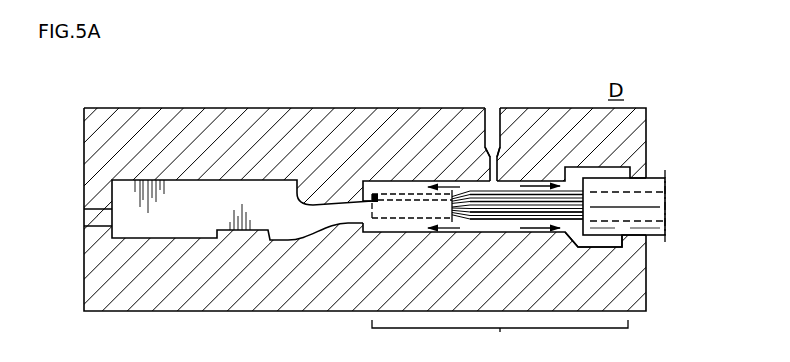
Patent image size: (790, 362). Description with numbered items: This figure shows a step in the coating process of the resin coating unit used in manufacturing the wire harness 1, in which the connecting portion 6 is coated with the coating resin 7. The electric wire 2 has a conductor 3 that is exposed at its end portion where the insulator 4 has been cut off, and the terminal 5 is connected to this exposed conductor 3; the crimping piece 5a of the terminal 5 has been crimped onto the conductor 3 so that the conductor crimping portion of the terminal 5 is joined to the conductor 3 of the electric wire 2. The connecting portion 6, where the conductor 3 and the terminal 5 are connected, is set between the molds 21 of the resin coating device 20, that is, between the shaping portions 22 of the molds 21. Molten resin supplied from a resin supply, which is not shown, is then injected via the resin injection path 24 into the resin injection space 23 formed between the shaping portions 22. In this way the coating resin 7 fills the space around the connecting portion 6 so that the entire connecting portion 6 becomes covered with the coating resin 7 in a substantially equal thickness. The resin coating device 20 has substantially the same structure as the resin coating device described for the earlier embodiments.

The wire harness 1 is at (106, 190).
The electric wire 2 is at (656, 172).
The conductor 3 is at (508, 203).
The insulator 4 is at (657, 198).
The terminal 5 is at (106, 225).
The crimping piece 5a is at (422, 195).
The connecting portion 6 is at (500, 338).
The coating resin 7 is at (493, 187).
The resin coating device 20 is at (167, 107).
The mold 21 is at (128, 132).
The shaping portion 22 is at (375, 160).
The resin injection space 23 is at (613, 241).
The resin injection path 24 is at (490, 138).